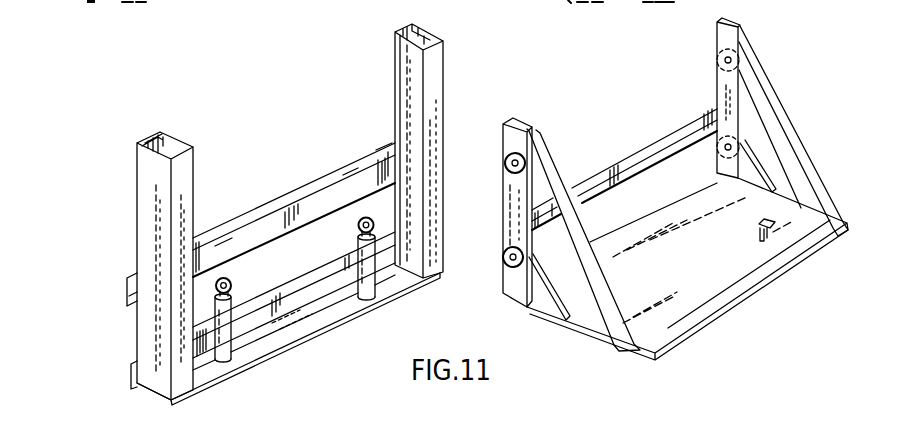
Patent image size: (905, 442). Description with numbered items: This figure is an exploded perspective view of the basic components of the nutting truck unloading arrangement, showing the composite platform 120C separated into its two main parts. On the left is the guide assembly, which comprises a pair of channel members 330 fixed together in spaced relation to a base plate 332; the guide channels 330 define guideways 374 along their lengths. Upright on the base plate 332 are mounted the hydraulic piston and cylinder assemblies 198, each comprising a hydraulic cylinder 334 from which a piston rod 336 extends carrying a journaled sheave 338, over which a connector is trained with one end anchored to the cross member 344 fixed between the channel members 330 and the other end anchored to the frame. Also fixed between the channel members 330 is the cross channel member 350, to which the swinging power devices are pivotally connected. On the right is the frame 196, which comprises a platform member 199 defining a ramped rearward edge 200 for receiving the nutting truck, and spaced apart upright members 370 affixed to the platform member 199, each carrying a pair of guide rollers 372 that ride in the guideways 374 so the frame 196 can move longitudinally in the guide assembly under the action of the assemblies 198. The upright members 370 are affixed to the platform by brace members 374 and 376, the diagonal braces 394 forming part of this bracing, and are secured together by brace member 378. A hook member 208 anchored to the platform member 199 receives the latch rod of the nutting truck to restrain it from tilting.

The composite platform 120C is at (110, 155).
The guideway / brace member 374 is at (158, 133).
The channel member 330 is at (150, 199).
The hydraulic piston and cylinder assembly 198 is at (222, 232).
The sheave 338 is at (358, 222).
The cross channel member 350 is at (376, 173).
The cross member 344 is at (306, 292).
The base plate 332 is at (297, 330).
The hydraulic cylinder 334 is at (230, 356).
The piston rod 336 is at (373, 236).
The frame 196 is at (518, 325).
The upright member 370 is at (523, 126).
The guide roller 372 is at (503, 160).
The brace member 378 is at (642, 150).
The brace member 376 is at (747, 145).
The diagonal brace 394 is at (783, 143).
The platform member 199 is at (588, 317).
The ramped rearward edge 200 is at (722, 307).
The hook member 208 is at (759, 231).